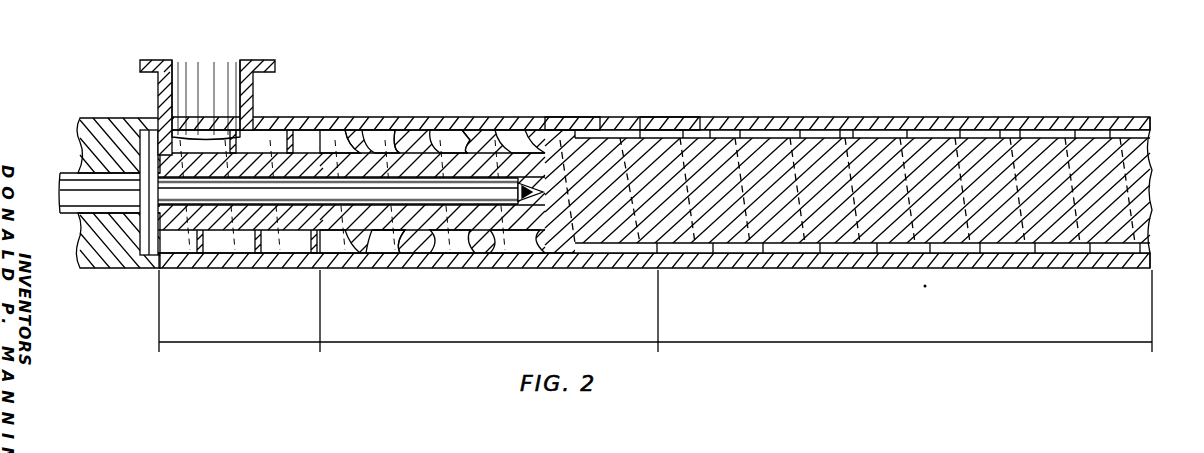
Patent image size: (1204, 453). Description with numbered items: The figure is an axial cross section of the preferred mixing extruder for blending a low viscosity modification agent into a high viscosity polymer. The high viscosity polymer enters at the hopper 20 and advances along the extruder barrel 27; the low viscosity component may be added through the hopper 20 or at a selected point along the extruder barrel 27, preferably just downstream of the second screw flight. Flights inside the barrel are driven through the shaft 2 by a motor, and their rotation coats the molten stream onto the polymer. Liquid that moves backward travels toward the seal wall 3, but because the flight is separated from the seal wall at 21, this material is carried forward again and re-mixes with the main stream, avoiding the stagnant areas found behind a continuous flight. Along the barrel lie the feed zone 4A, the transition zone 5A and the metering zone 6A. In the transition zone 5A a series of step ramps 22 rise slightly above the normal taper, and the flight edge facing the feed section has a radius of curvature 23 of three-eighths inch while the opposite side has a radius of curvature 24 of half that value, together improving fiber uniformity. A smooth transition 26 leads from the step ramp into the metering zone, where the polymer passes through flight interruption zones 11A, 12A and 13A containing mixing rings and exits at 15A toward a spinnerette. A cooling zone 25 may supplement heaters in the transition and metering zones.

The shaft 2 is at (60, 185).
The seal wall 3 is at (112, 140).
The feed zone 4A is at (239, 311).
The transition zone 5A is at (489, 311).
The metering zone 6A is at (905, 311).
The flight interruption zone 11A is at (712, 132).
The flight interruption zone 12A is at (850, 132).
The flight interruption zone 13A is at (986, 132).
The exit 15A is at (1152, 162).
The hopper 20 is at (207, 85).
The flight separation 21 is at (168, 133).
The step ramps 22 is at (362, 130).
The radius of curvature 23 is at (440, 130).
The radius of curvature 24 is at (540, 125).
The cooling zone 25 is at (385, 232).
The smooth transition 26 is at (550, 120).
The extruder barrel 27 is at (663, 122).